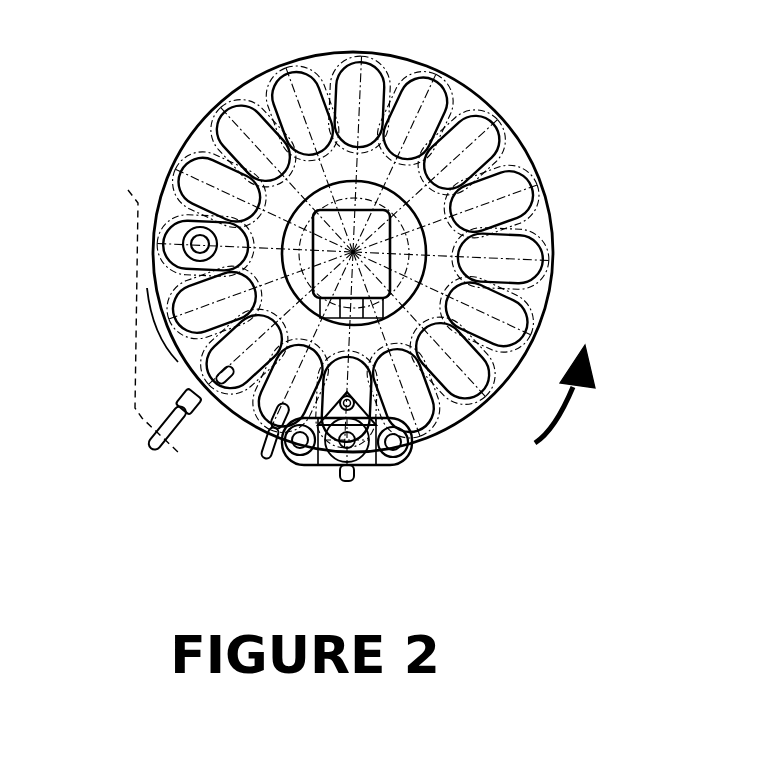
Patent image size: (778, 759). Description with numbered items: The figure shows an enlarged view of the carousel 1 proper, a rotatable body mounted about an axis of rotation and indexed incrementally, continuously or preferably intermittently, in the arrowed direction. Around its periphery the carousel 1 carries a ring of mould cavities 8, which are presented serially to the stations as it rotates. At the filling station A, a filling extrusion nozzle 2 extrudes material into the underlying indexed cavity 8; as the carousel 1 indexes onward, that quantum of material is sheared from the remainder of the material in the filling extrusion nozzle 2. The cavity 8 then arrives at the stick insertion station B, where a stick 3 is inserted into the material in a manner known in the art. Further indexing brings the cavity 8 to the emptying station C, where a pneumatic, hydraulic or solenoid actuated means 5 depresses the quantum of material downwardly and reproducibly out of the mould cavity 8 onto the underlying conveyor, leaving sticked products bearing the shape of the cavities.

The carousel 1 is at (522, 90).
The filling extrusion nozzle 2 is at (187, 237).
The stick 3 is at (198, 408).
The actuated means 5 is at (400, 458).
The mould cavities 8 is at (518, 258).
The filling station A is at (195, 249).
The stick insertion station B is at (155, 420).
The emptying station C is at (350, 481).